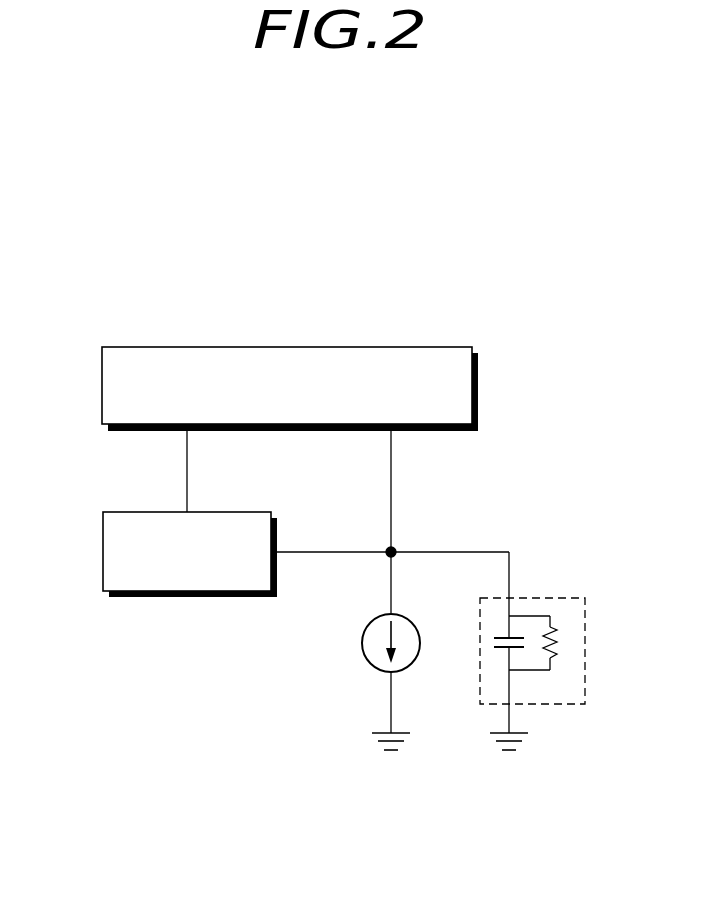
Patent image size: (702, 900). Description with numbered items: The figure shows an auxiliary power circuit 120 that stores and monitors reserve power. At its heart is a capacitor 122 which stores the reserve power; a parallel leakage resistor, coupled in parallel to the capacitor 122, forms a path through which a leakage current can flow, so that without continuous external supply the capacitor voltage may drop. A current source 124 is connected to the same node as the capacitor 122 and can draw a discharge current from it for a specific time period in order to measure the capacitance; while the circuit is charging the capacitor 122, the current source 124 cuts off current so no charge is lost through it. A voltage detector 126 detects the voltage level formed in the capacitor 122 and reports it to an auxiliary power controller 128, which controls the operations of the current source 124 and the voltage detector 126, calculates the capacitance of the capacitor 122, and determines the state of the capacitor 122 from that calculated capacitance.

The auxiliary power circuit 120 is at (583, 281).
The capacitor 122 is at (545, 598).
The current source 124 is at (371, 617).
The voltage detector 126 is at (103, 549).
The auxiliary power controller 128 is at (286, 346).